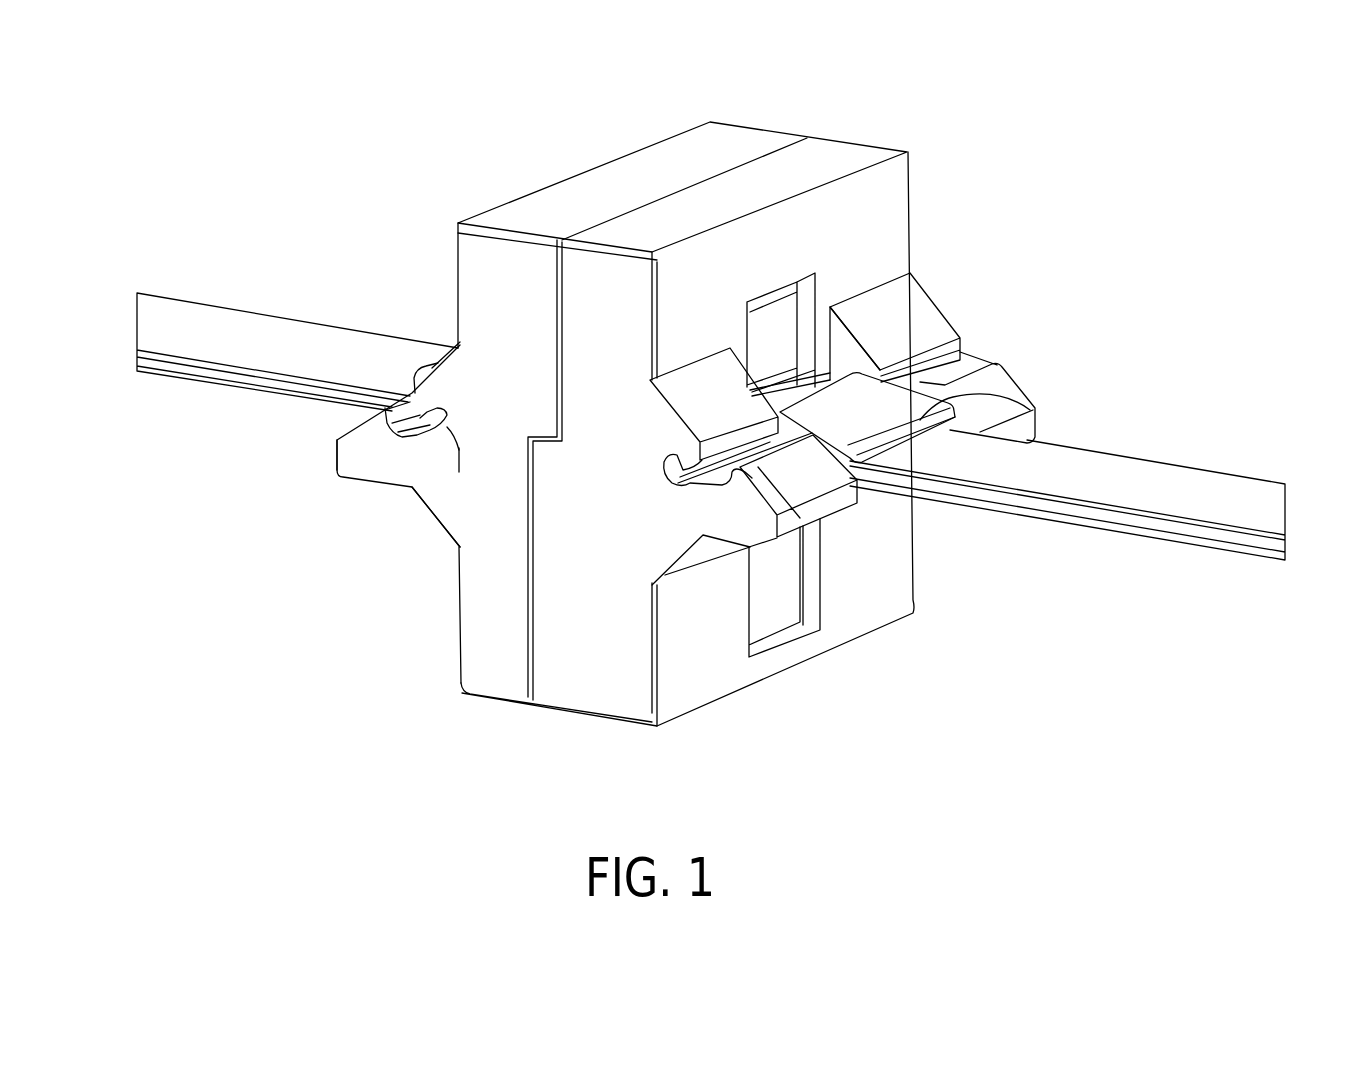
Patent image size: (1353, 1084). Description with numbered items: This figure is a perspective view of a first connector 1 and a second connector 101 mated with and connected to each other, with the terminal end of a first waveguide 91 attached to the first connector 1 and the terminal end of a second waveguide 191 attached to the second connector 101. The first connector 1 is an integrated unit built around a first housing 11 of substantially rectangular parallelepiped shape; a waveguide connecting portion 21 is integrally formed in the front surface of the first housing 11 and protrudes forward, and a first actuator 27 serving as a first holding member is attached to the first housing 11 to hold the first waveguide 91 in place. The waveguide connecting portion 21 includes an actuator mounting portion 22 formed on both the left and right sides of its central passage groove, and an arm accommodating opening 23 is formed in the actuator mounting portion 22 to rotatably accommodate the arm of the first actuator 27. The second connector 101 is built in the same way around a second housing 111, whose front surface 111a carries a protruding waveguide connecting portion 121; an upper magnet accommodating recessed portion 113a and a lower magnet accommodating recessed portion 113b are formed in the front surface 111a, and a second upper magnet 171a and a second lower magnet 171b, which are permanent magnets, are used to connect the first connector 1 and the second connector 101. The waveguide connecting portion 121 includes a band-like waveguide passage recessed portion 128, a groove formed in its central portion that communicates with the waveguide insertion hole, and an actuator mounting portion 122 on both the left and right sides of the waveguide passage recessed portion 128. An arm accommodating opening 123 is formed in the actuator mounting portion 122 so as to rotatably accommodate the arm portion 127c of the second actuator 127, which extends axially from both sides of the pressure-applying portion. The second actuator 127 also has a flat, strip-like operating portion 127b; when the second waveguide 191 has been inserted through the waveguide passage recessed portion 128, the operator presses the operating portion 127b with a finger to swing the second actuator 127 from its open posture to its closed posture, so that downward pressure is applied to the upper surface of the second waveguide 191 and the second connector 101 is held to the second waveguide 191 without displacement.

The first connector 1 is at (759, 106).
The second connector 101 is at (926, 135).
The first housing 11 is at (660, 142).
The second housing 111 is at (913, 186).
The front surface 111a is at (887, 620).
The upper magnet accommodating recessed portion 113a is at (815, 305).
The lower magnet accommodating recessed portion 113b is at (797, 628).
The second upper magnet 171a is at (771, 317).
The second lower magnet 171b is at (763, 618).
The waveguide connecting portion 121 is at (1010, 380).
The actuator mounting portion 122 is at (958, 331).
The arm accommodating opening 123 is at (673, 470).
The second actuator 127 is at (885, 417).
The operating portion 127b is at (1037, 417).
The arm portion 127c is at (823, 530).
The waveguide passage recessed portion 128 is at (850, 360).
The waveguide connecting portion 21 is at (380, 482).
The actuator mounting portion 22 is at (357, 461).
The arm accommodating opening 23 is at (460, 472).
The first actuator 27 is at (435, 367).
The first waveguide 91 is at (210, 305).
The second waveguide 191 is at (1213, 471).